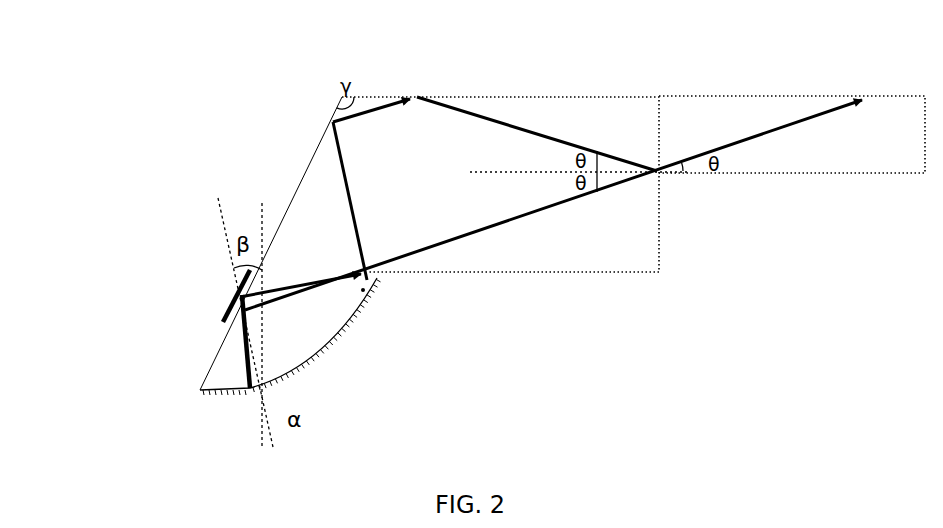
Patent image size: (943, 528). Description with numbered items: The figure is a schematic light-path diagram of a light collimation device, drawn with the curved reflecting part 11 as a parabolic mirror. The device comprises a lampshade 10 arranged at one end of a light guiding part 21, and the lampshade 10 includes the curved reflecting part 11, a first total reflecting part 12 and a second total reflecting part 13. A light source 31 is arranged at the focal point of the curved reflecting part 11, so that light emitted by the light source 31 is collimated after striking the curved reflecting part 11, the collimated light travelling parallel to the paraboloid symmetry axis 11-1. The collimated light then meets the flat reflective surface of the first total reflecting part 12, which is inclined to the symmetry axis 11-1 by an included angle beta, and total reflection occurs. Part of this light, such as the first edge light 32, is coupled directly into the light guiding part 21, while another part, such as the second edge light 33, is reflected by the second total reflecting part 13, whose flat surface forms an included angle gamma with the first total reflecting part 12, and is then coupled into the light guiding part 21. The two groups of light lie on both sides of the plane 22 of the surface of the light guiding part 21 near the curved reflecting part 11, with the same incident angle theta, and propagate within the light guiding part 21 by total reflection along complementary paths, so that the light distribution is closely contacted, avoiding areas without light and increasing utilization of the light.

The lampshade 10 is at (512, 302).
The curved reflecting part 11 is at (354, 348).
The paraboloid symmetry axis 11-1 is at (217, 217).
The first total reflecting part 12 is at (297, 174).
The second total reflecting part 13 is at (495, 84).
The light guiding part 21 is at (789, 193).
The plane 22 is at (495, 172).
The light source 31 is at (238, 296).
The first edge light 32 is at (242, 352).
The second edge light 33 is at (362, 293).